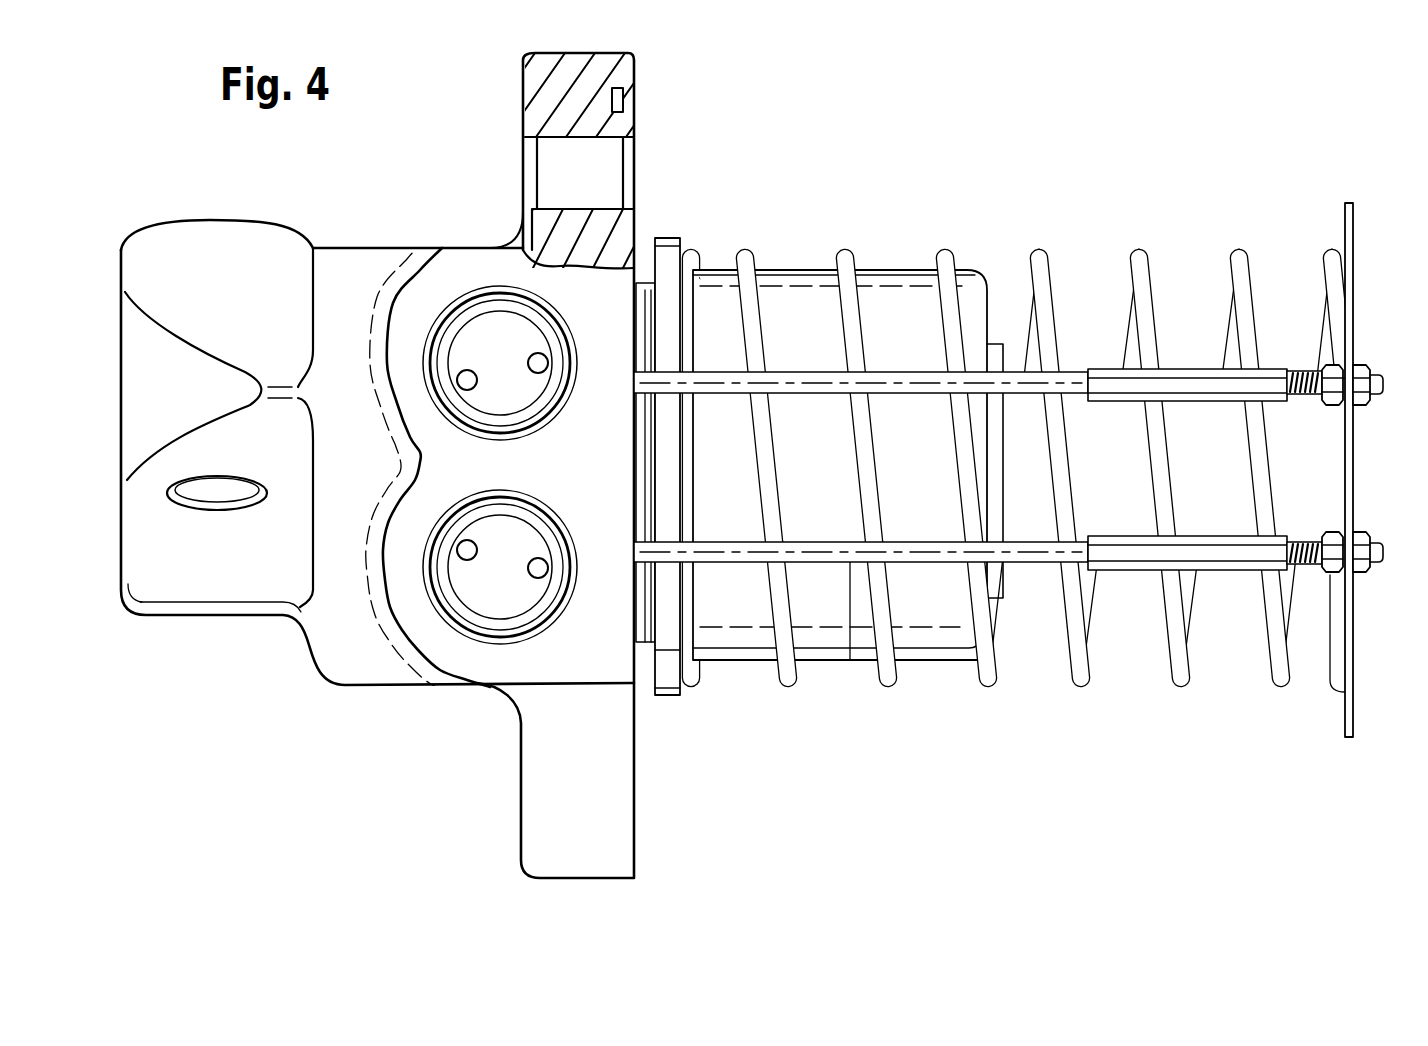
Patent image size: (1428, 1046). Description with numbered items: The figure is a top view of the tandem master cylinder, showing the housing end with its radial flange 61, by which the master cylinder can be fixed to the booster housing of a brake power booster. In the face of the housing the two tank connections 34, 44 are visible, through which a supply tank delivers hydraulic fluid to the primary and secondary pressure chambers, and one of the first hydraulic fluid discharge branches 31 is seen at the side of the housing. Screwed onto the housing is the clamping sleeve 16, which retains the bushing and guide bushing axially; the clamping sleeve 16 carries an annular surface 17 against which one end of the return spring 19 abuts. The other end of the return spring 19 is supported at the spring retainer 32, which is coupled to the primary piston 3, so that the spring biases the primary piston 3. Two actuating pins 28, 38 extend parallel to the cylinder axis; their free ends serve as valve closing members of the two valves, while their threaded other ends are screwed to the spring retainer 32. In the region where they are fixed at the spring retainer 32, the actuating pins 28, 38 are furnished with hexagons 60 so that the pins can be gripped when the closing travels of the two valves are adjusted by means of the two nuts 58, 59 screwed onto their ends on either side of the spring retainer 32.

The primary piston 3 is at (1022, 513).
The clamping sleeve 16 is at (805, 300).
The annular surface 17 is at (668, 270).
The return spring 19 is at (742, 258).
The actuating pin 28 is at (915, 545).
The first hydraulic fluid discharge branch 31 is at (210, 497).
The spring retainer 32 is at (1348, 738).
The tank connection 34 is at (488, 600).
The actuating pin 38 is at (905, 380).
The tank connection 44 is at (489, 330).
The nut 58 is at (1360, 572).
The nut 59 is at (1330, 575).
The hexagon 60 is at (1185, 375).
The radial flange 61 is at (548, 103).